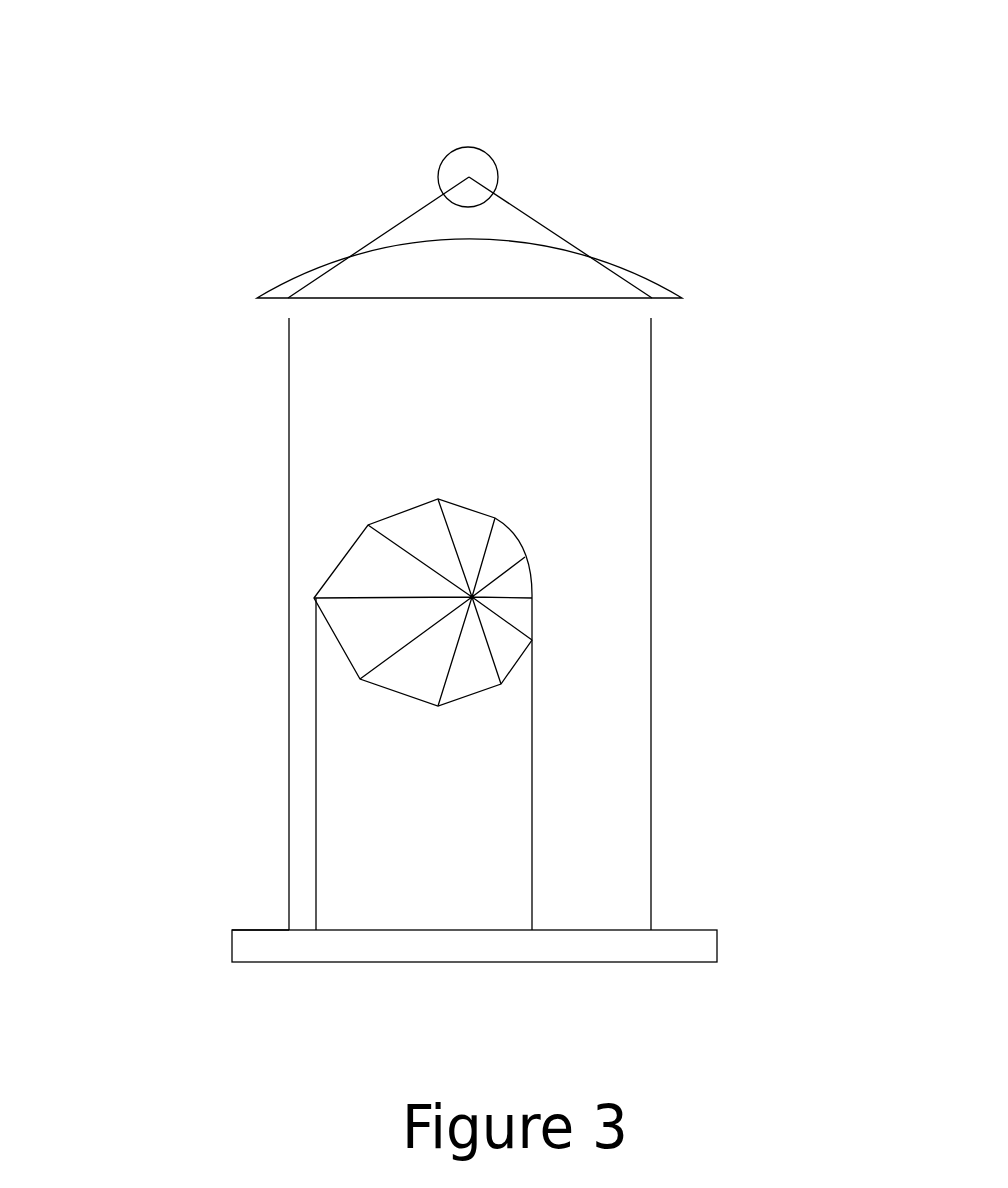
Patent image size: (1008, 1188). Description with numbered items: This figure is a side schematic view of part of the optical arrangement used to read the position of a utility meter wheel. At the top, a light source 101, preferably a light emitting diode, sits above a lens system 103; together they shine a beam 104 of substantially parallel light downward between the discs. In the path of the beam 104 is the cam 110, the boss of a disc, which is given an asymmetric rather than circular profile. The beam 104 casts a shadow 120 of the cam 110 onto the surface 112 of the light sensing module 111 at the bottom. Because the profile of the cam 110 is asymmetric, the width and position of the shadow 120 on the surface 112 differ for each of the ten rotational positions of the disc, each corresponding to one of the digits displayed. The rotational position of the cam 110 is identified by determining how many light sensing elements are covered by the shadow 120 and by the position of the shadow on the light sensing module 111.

The light source 101 is at (436, 178).
The lens system 103 is at (470, 360).
The beam 104 is at (287, 540).
The cam 110 is at (474, 540).
The light sensing module 111 is at (473, 965).
The surface 112 is at (262, 928).
The shadow 120 is at (412, 928).